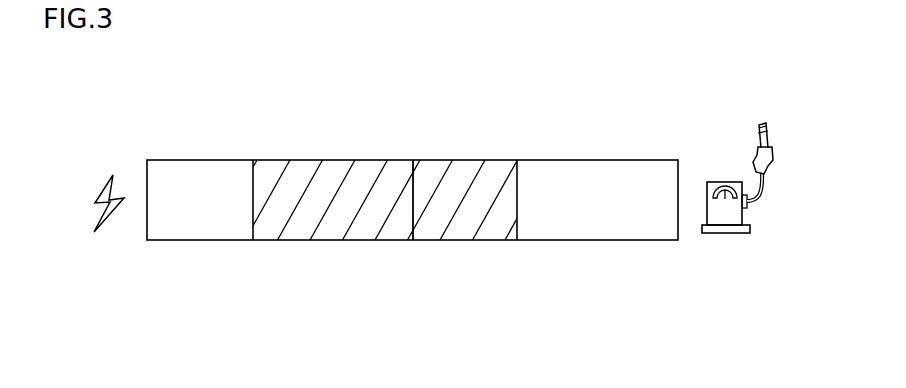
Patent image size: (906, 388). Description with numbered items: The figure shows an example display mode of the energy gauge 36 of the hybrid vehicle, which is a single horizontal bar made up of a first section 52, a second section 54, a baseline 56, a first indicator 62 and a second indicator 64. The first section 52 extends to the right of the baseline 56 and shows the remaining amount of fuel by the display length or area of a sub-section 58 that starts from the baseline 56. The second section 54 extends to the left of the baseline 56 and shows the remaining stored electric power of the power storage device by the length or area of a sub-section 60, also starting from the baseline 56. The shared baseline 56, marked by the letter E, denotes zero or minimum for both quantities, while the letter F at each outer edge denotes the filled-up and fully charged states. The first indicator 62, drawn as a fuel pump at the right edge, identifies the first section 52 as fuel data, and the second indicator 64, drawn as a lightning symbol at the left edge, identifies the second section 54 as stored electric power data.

The energy gauge 36 is at (159, 70).
The first section 52 is at (678, 257).
The second section 54 is at (412, 257).
The baseline 56 is at (413, 200).
The sub-section 58 is at (462, 187).
The sub-section 60 is at (308, 187).
The first indicator 62 is at (728, 240).
The second indicator 64 is at (103, 234).